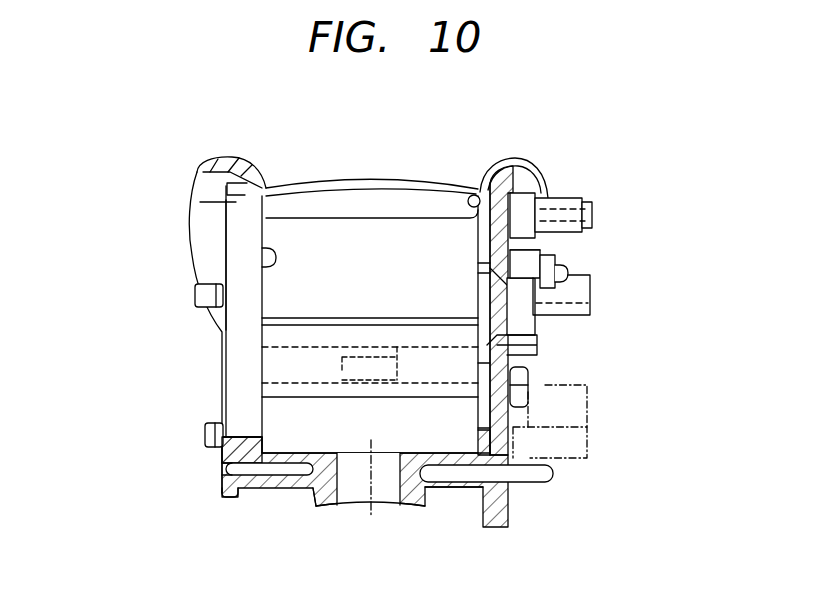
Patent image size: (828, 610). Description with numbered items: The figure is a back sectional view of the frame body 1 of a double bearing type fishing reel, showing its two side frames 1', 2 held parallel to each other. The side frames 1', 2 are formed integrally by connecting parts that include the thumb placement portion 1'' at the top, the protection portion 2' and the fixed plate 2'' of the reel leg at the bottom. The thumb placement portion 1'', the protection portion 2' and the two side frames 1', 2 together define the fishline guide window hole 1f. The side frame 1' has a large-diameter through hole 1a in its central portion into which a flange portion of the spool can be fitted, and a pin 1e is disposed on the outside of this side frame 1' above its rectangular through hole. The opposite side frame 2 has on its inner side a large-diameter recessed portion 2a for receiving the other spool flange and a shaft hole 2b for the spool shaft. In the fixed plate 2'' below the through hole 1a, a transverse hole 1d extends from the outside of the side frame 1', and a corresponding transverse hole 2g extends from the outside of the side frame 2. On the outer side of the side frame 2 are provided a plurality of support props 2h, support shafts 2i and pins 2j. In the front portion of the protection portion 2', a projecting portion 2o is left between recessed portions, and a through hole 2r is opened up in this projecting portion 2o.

The frame body 1 is at (408, 286).
The side frame 1' is at (173, 265).
The thumb placement portion 1'' is at (372, 142).
The through hole 1a is at (236, 202).
The transverse hole 1d is at (253, 493).
The pin 1e is at (195, 296).
The fishline guide window hole 1f is at (262, 263).
The side frame 2 is at (397, 342).
The protection portion 2' is at (372, 472).
The fixed plate 2'' is at (322, 538).
The recessed portion 2a is at (474, 194).
The shaft hole 2b is at (538, 341).
The transverse hole 2g is at (452, 490).
The support props 2h is at (591, 292).
The support shafts 2i is at (593, 211).
The pins 2j is at (566, 272).
The projecting portion 2o is at (343, 370).
The through hole 2r is at (353, 357).